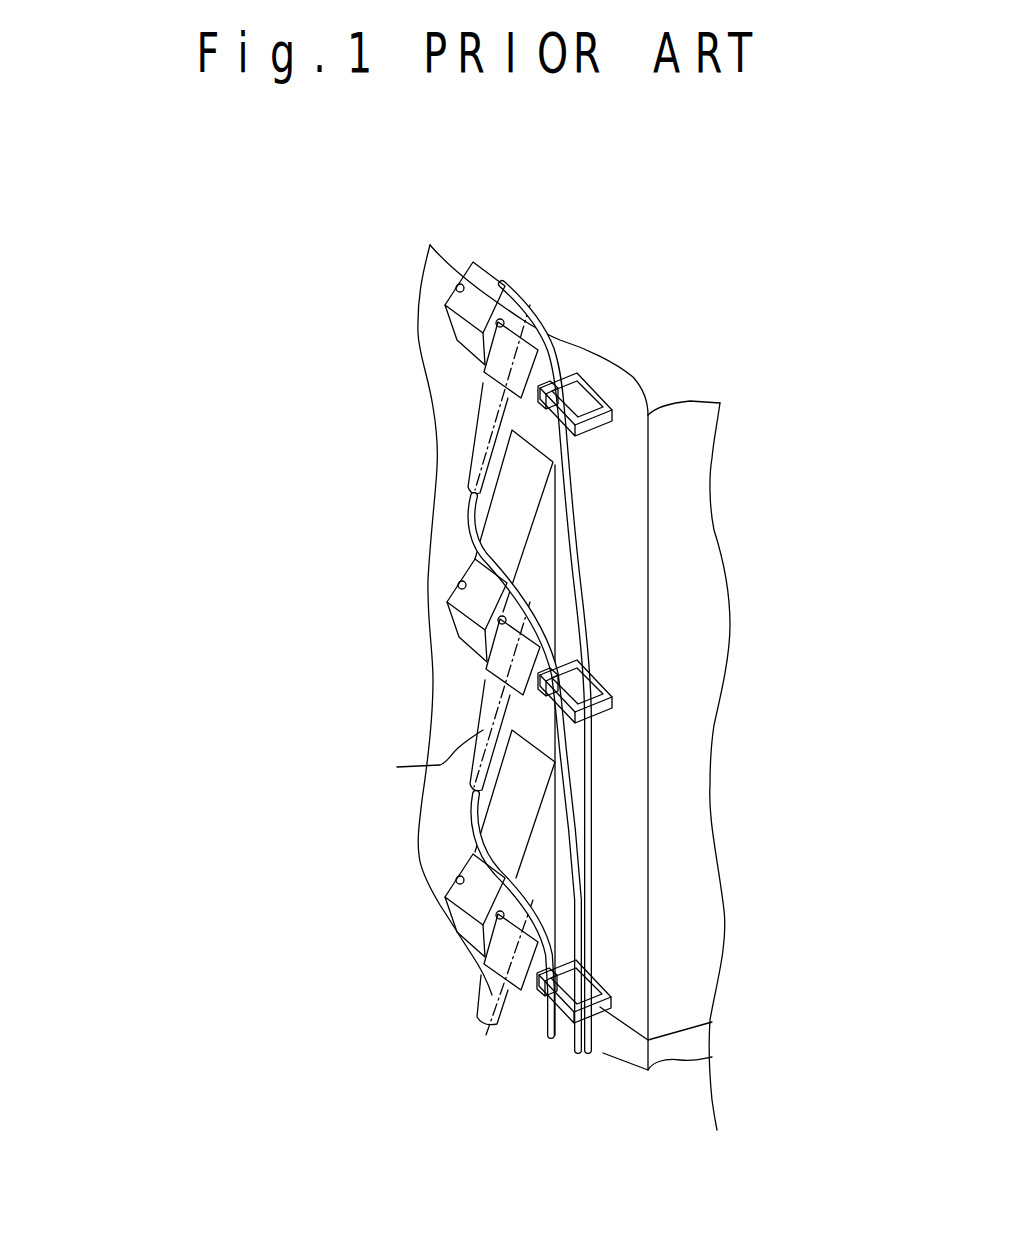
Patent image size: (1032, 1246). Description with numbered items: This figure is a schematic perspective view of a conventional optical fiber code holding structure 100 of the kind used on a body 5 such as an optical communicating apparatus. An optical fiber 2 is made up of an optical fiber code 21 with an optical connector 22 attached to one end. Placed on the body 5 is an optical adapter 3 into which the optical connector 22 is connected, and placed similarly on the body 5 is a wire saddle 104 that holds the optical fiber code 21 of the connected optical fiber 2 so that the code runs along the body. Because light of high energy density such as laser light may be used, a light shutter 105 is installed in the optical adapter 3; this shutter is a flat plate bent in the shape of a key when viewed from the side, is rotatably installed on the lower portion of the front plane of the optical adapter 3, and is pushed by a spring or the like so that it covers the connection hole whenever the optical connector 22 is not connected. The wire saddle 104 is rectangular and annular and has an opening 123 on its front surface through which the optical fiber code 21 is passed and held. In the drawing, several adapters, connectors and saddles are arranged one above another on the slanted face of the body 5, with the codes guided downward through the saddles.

The optical fiber code holding structure 100 is at (625, 656).
The optical fiber 2 is at (156, 485).
The optical connector 22 is at (493, 383).
The optical fiber code 21 is at (470, 508).
The optical adapter 3 is at (482, 572).
The light shutter 105 is at (478, 605).
The body 5 is at (448, 707).
The wire saddle 104 is at (612, 705).
The opening 123 is at (518, 742).